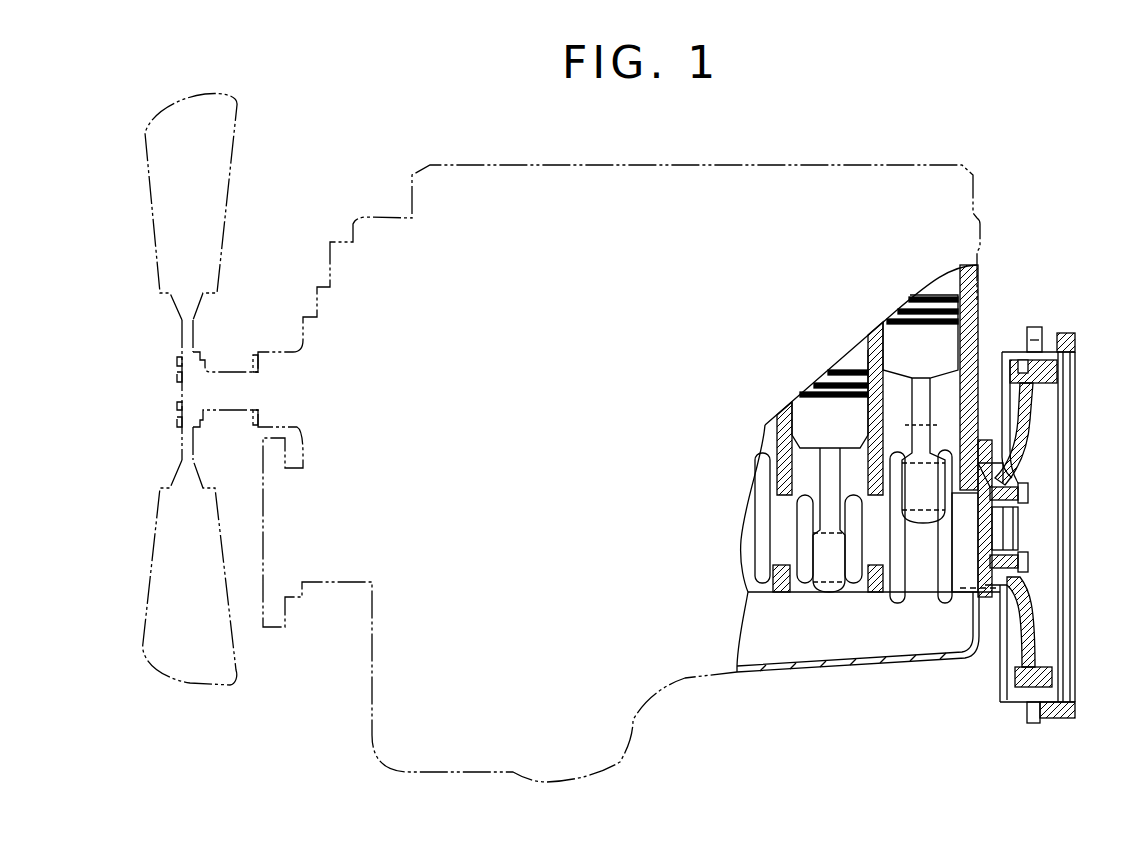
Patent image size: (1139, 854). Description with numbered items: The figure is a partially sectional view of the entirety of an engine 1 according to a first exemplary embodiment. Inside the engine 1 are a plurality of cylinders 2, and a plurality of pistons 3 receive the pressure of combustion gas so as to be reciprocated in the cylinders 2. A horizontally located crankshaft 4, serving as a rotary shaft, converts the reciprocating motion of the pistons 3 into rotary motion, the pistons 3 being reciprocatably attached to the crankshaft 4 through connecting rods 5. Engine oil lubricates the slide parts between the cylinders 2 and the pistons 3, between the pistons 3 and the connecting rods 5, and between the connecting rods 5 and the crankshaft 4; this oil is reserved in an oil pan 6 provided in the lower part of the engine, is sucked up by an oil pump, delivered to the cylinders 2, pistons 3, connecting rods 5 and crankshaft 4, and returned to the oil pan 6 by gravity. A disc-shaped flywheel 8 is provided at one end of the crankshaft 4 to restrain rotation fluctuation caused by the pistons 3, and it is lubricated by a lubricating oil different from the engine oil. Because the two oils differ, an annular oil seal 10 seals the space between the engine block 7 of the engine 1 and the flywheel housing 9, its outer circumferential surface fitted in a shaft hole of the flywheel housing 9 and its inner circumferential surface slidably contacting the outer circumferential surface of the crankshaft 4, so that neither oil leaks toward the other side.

The engine 1 is at (800, 165).
The cylinders 2 is at (948, 392).
The pistons 3 is at (848, 408).
The crankshaft 4 is at (944, 603).
The connecting rods 5 is at (918, 408).
The oil pan 6 is at (798, 637).
The engine block 7 is at (935, 420).
The flywheel 8 is at (1033, 623).
The flywheel housing 9 is at (1000, 460).
The oil seal 10 is at (1002, 592).